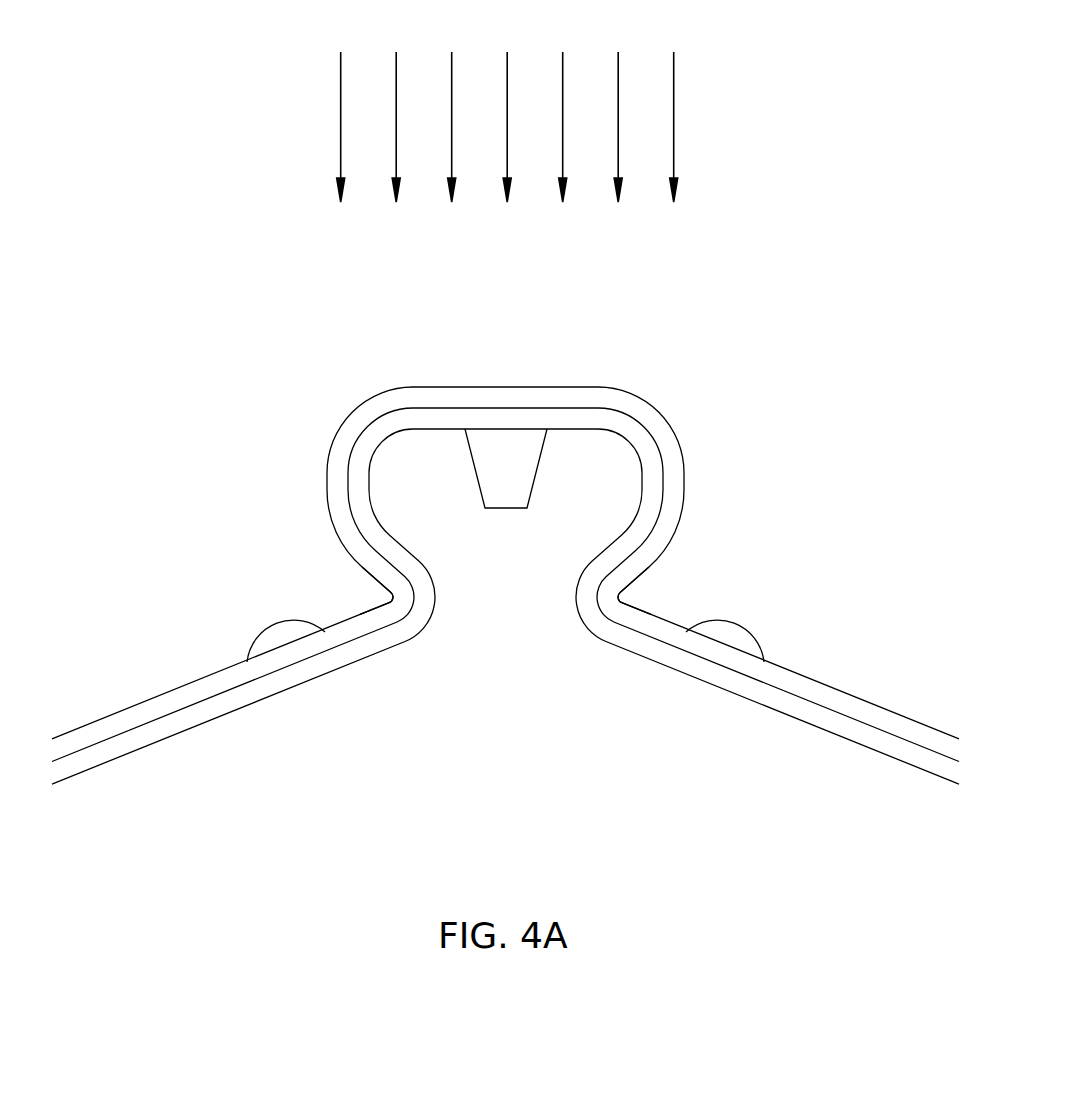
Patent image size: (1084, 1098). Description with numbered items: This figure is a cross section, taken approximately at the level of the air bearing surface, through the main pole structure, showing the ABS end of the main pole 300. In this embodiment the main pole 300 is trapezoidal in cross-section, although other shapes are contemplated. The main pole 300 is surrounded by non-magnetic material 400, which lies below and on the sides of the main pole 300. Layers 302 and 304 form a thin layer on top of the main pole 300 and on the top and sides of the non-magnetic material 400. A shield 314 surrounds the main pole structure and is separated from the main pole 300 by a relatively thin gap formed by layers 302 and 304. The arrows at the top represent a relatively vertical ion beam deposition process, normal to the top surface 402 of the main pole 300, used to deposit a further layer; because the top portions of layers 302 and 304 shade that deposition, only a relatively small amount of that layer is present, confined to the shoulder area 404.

The shield 314 is at (528, 256).
The non-magnetic material 400 is at (509, 557).
The main pole 300 is at (503, 480).
The layer 302 is at (829, 723).
The layer 304 is at (812, 688).
The top surface of main pole 402 is at (512, 418).
The shoulder area 404 is at (360, 581).